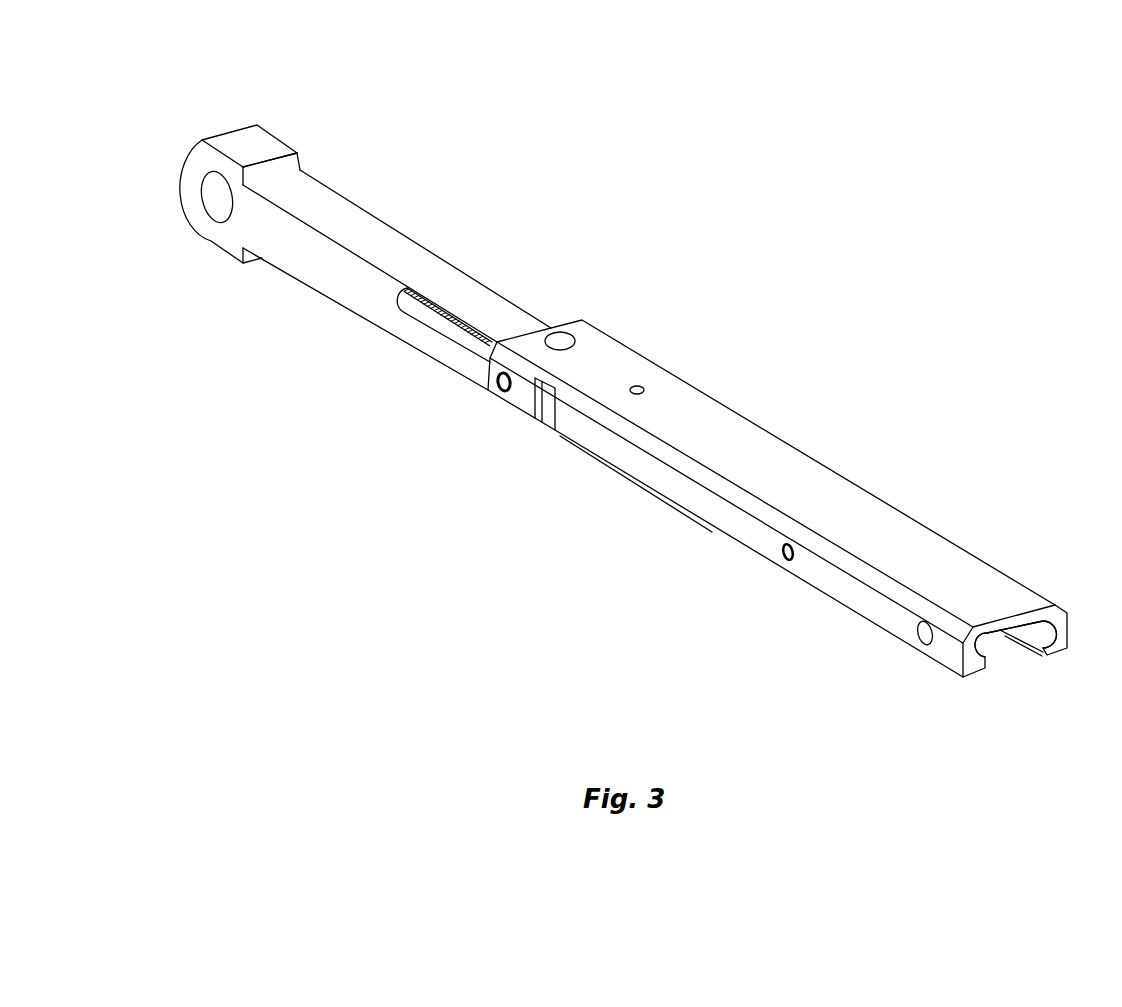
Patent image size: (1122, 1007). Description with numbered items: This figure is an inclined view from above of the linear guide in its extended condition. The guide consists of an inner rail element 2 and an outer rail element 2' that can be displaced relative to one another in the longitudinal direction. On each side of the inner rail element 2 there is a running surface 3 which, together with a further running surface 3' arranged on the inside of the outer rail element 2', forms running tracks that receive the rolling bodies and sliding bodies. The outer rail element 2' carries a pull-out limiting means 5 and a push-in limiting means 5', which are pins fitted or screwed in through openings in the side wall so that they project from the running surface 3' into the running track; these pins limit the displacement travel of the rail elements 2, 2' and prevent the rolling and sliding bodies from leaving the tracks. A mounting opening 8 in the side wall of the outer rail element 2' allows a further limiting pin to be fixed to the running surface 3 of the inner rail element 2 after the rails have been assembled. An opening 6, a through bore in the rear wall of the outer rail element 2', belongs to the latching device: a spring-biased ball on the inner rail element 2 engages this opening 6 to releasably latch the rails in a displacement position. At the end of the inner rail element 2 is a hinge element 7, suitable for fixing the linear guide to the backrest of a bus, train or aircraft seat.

The inner rail element 2 is at (397, 238).
The outer rail element 2' is at (777, 498).
The running surface 3 is at (452, 260).
The further running surface 3' is at (1016, 703).
The pull-out limiting means 5 is at (492, 453).
The push-in limiting means 5' is at (775, 623).
The opening 6 is at (640, 386).
The hinge element 7 is at (211, 226).
The mounting opening 8 is at (923, 640).